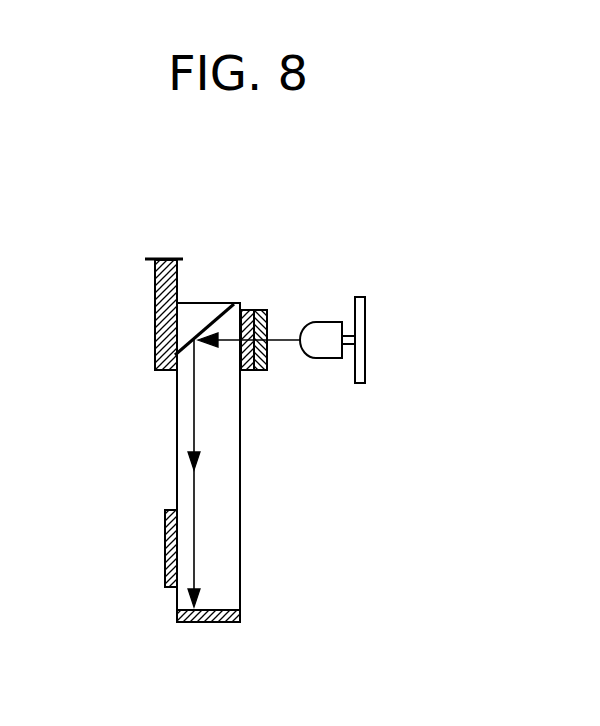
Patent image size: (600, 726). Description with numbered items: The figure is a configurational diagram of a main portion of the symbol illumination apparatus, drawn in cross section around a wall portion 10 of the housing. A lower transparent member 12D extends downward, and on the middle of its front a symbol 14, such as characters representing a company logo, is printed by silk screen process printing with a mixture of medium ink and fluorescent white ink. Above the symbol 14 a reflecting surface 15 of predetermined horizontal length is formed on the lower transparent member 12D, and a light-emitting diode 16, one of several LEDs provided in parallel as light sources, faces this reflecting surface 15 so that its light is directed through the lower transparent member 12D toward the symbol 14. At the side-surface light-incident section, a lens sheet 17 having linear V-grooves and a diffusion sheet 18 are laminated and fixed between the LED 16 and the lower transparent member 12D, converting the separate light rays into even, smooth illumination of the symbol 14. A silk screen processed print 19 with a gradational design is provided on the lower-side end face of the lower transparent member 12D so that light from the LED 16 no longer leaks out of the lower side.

The wall / housing 10 is at (154, 320).
The lower transparent member 12D is at (218, 477).
The symbol 14 is at (165, 553).
The reflecting surface 15 is at (202, 322).
The light-emitting diode 16 is at (327, 333).
The lens sheet 17 is at (260, 310).
The diffusion sheet 18 is at (247, 310).
The silk screen processed print 19 is at (217, 623).